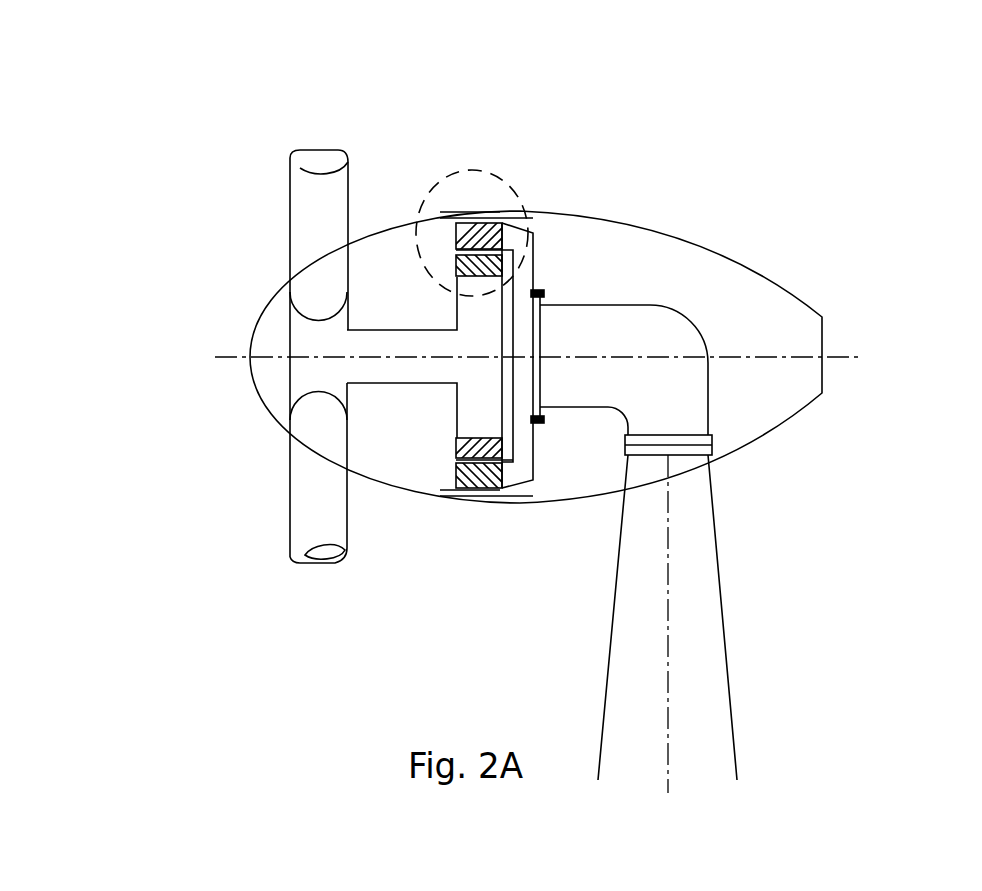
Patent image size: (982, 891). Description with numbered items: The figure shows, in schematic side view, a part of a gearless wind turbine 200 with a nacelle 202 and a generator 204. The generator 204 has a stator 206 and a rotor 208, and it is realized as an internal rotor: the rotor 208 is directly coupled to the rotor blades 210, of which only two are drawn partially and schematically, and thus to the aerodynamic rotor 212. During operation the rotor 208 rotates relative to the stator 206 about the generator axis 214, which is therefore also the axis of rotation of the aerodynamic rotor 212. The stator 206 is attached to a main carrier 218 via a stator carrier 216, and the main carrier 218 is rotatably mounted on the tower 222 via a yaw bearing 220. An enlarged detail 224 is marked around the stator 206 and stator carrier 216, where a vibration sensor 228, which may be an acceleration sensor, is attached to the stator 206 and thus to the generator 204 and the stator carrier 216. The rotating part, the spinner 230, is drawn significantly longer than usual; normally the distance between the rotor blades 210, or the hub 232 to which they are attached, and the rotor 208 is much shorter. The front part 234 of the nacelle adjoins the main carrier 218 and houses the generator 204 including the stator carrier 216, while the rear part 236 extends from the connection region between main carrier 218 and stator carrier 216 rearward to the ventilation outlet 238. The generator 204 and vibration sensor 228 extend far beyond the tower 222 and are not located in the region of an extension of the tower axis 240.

The wind turbine 200 is at (593, 95).
The nacelle 202 is at (740, 292).
The generator 204 is at (495, 165).
The stator 206 is at (447, 215).
The rotor 208 is at (447, 262).
The rotor blades 210 is at (307, 235).
The aerodynamic rotor 212 is at (187, 403).
The generator axis 214 is at (267, 357).
The stator carrier 216 is at (545, 258).
The main carrier 218 is at (652, 312).
The yaw bearing 220 is at (712, 447).
The tower 222 is at (706, 620).
The enlarged detail 224 is at (543, 213).
The vibration sensor 228 is at (500, 213).
The spinner 230 is at (403, 472).
The hub 232 is at (300, 327).
The front part 234 is at (457, 533).
The rear part 236 is at (563, 522).
The ventilation outlet 238 is at (838, 335).
The tower axis 240 is at (668, 783).